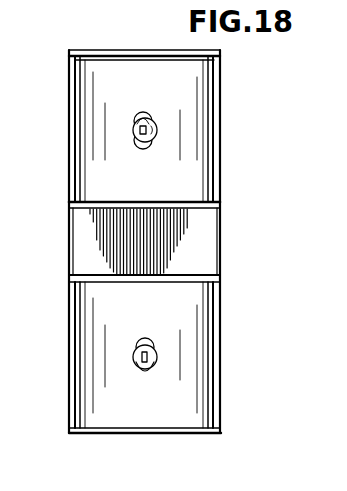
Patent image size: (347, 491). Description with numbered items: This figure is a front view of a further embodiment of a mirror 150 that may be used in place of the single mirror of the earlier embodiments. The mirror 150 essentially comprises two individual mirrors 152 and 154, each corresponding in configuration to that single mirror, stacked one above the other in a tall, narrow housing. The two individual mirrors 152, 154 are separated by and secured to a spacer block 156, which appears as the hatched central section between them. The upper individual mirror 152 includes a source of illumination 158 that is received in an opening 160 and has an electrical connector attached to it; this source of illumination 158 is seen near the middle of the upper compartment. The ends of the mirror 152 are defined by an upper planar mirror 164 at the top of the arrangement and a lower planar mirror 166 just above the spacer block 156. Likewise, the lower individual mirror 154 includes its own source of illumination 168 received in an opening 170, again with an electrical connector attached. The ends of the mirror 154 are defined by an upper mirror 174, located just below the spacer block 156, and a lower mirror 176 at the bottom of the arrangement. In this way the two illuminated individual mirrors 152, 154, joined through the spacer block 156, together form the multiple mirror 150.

The mirror 150 is at (227, 158).
The individual mirror 152 is at (220, 92).
The individual mirror 154 is at (220, 365).
The spacer block 156 is at (77, 250).
The source of illumination 158 is at (133, 130).
The opening 160 is at (147, 115).
The upper planar mirror 164 is at (93, 53).
The lower planar mirror 166 is at (192, 208).
The source of illumination 168 is at (133, 357).
The opening 170 is at (155, 374).
The upper mirror 174 is at (178, 279).
The lower mirror 176 is at (212, 436).